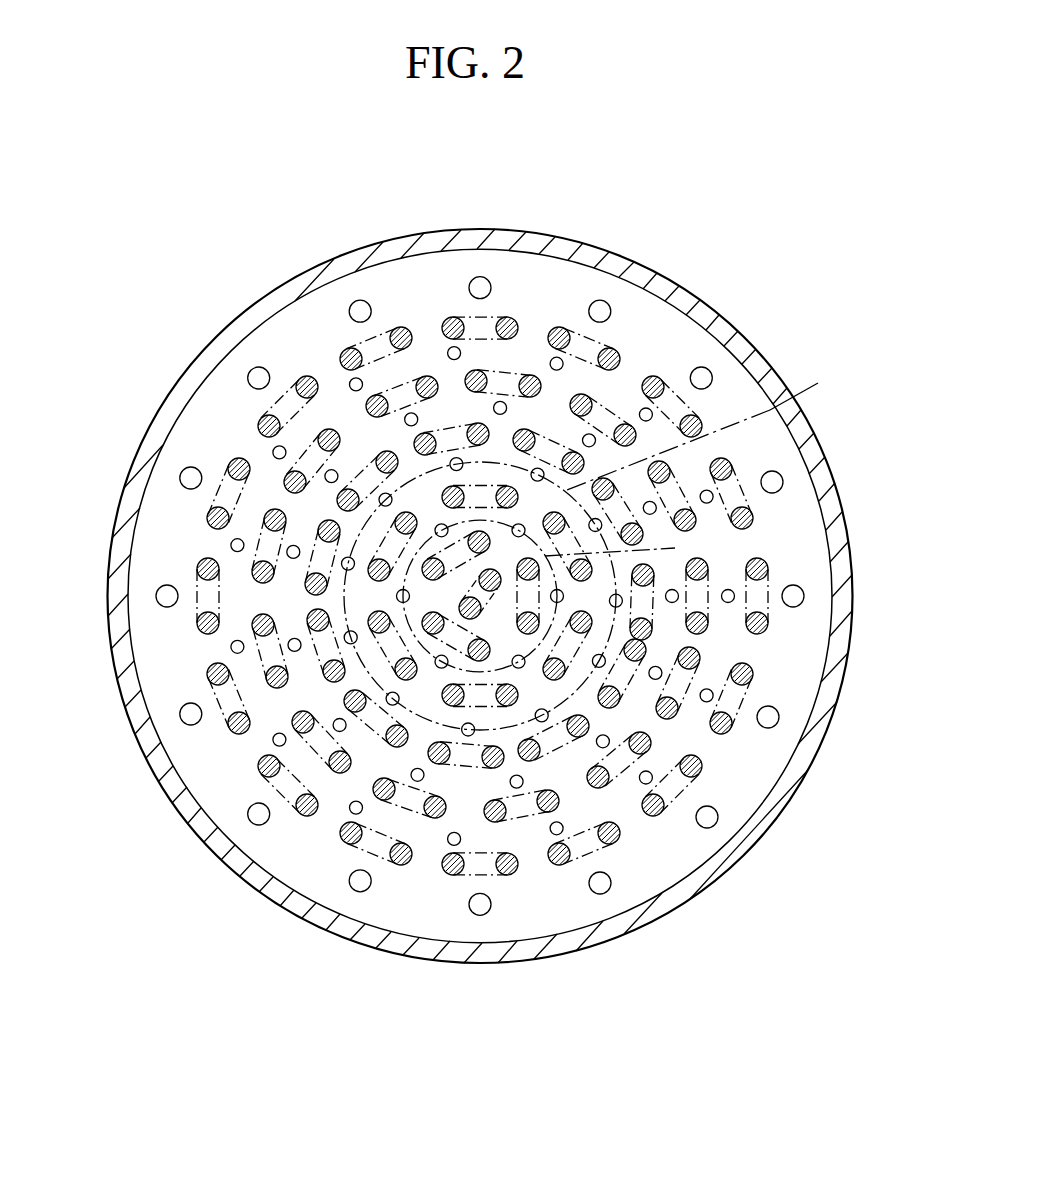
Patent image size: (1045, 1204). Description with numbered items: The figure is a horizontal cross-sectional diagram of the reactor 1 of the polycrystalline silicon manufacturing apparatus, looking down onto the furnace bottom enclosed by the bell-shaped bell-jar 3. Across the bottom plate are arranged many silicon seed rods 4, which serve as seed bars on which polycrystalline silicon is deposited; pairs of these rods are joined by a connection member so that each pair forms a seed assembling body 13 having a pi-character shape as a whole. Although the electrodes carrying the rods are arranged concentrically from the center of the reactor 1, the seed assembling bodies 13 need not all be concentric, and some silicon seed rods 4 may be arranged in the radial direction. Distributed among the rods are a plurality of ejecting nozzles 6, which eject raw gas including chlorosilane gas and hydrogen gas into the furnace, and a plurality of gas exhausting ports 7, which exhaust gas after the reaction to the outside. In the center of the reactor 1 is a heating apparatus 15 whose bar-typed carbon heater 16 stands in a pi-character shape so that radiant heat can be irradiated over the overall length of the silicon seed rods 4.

The reactor 1 is at (807, 263).
The bell-jar 3 is at (820, 468).
The silicon seed rods 4 is at (628, 352).
The ejecting nozzles 6 is at (450, 347).
The gas exhausting ports 7 is at (352, 301).
The seed assembling bodies 13 is at (389, 328).
The heating apparatus 15 is at (502, 568).
The carbon heater 16 is at (459, 607).